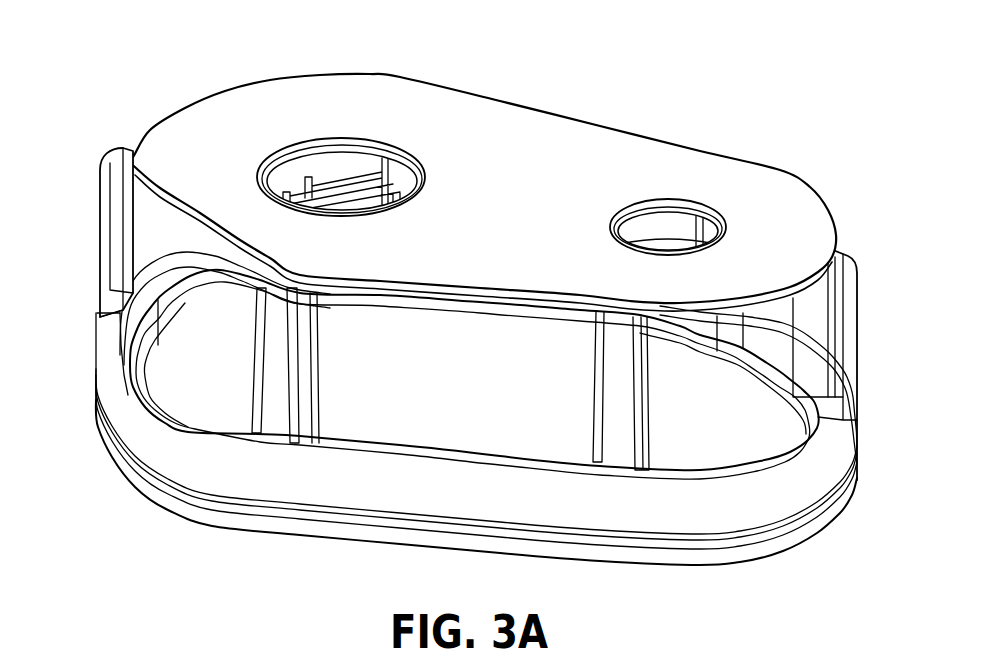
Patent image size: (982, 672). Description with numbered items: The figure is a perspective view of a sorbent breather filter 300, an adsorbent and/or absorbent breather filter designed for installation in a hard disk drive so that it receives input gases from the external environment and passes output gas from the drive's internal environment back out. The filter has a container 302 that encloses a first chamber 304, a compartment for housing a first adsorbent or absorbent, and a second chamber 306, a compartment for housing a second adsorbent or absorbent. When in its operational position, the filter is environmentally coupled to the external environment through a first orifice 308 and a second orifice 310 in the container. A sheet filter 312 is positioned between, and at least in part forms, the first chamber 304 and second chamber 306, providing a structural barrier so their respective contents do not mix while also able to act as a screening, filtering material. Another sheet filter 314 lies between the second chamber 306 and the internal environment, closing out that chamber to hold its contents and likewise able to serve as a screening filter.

The sorbent breather filter 300 is at (188, 50).
The container 302 is at (100, 243).
The first chamber 304 is at (187, 377).
The second chamber 306 is at (213, 463).
The first orifice 308 is at (664, 228).
The second orifice 310 is at (338, 160).
The sheet filter 312 is at (735, 424).
The sheet filter 314 is at (757, 497).